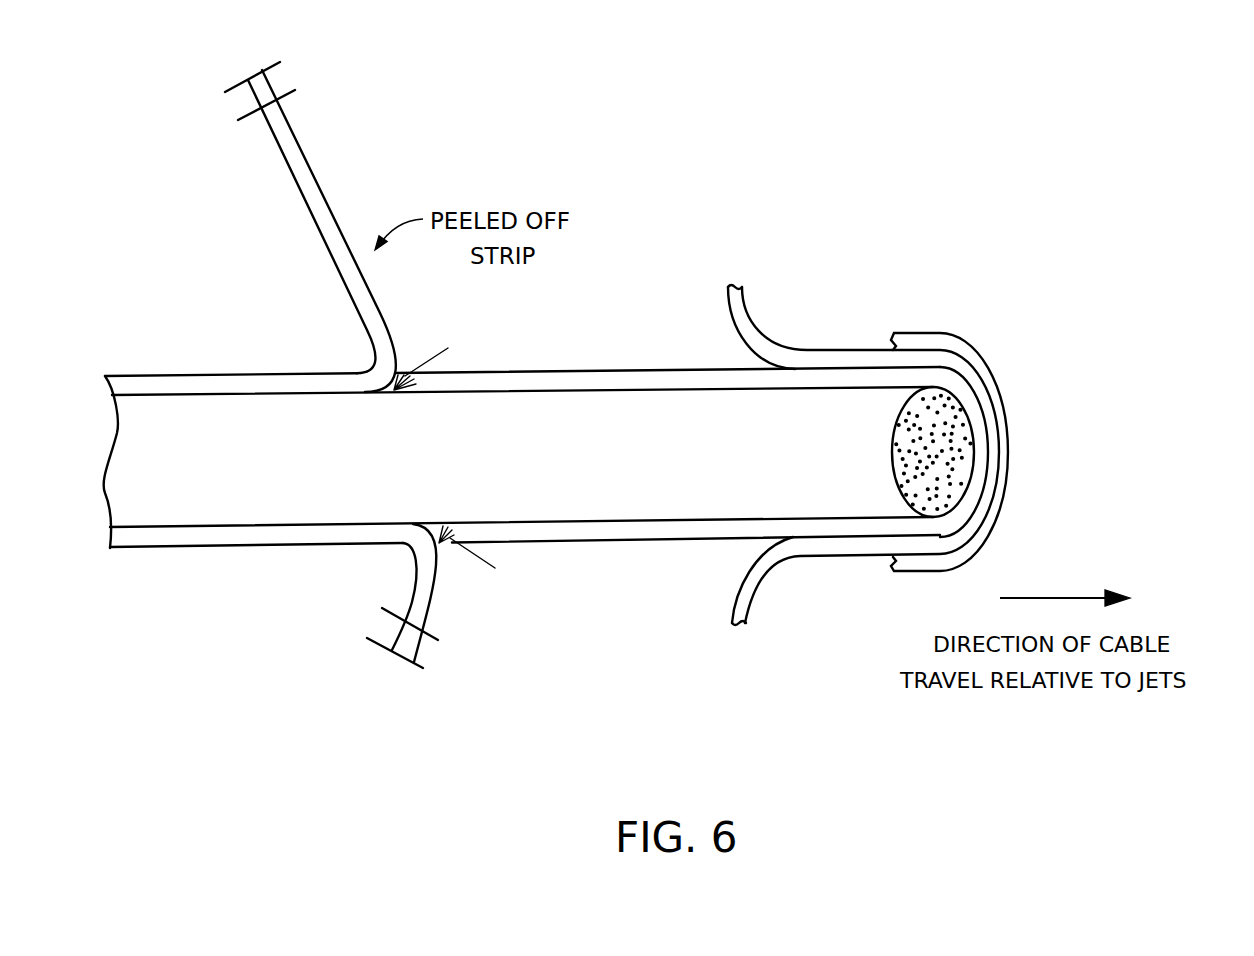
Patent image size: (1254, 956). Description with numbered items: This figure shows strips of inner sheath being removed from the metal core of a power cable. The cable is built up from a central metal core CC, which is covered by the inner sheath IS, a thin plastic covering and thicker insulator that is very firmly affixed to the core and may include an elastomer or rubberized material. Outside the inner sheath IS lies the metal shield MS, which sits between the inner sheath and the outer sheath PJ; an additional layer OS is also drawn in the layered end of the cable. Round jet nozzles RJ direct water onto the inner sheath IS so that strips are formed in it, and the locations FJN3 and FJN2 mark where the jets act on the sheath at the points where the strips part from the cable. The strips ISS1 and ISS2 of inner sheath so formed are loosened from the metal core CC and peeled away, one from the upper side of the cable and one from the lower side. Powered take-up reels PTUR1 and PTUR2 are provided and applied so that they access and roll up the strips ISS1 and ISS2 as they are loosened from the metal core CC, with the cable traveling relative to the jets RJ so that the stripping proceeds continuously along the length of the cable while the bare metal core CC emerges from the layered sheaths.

The powered take-up reel PTUR1 is at (300, 62).
The powered take-up reel PTUR2 is at (446, 668).
The strip of inner sheath ISS1 is at (300, 237).
The strip of inner sheath ISS2 is at (398, 597).
The fluid jet nozzle impact point 3 FJN3 is at (455, 334).
The fluid jet nozzle impact point 2 FJN2 is at (495, 578).
The inner sheath IS is at (734, 245).
The round jet nozzle RJ is at (652, 362).
The metal core CC is at (950, 388).
The outer sheath OS is at (994, 435).
The metal shield MS is at (1004, 470).
The outer sheath PJ is at (1002, 531).